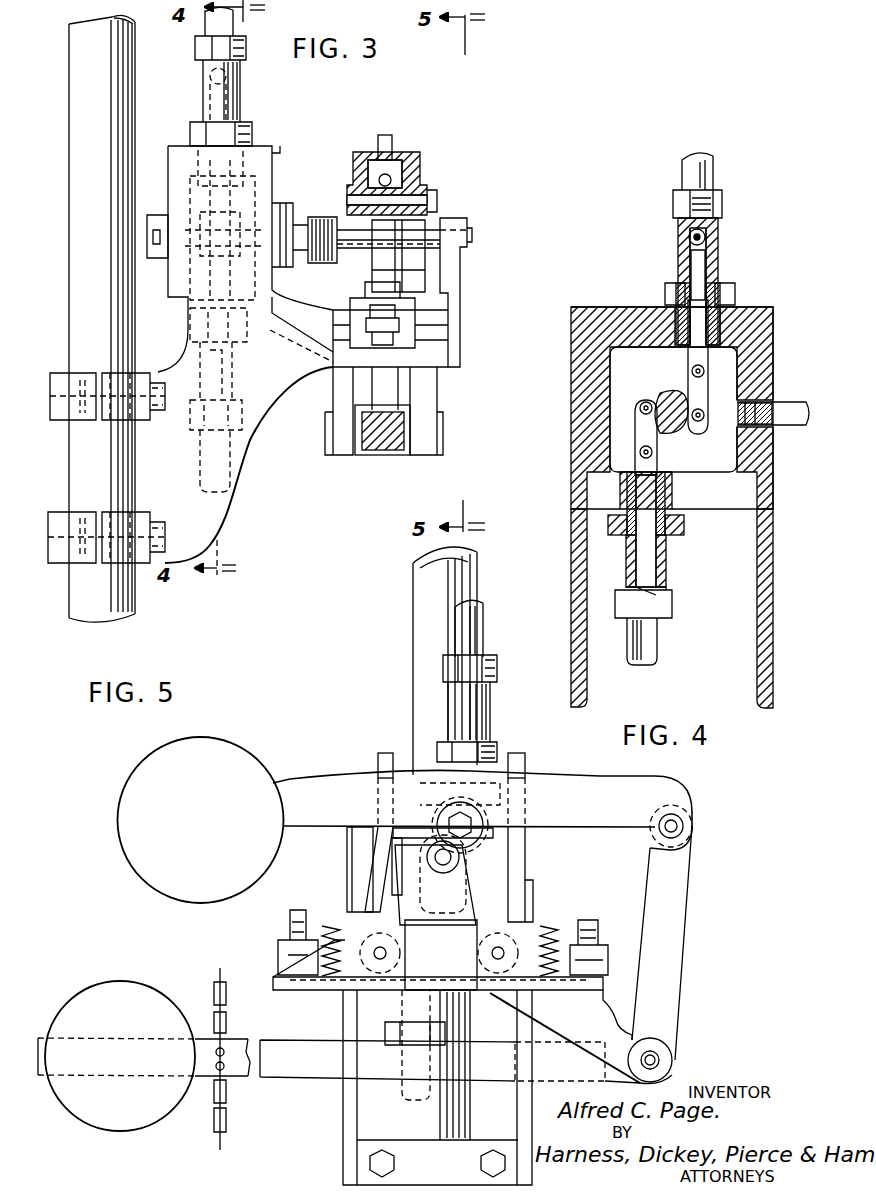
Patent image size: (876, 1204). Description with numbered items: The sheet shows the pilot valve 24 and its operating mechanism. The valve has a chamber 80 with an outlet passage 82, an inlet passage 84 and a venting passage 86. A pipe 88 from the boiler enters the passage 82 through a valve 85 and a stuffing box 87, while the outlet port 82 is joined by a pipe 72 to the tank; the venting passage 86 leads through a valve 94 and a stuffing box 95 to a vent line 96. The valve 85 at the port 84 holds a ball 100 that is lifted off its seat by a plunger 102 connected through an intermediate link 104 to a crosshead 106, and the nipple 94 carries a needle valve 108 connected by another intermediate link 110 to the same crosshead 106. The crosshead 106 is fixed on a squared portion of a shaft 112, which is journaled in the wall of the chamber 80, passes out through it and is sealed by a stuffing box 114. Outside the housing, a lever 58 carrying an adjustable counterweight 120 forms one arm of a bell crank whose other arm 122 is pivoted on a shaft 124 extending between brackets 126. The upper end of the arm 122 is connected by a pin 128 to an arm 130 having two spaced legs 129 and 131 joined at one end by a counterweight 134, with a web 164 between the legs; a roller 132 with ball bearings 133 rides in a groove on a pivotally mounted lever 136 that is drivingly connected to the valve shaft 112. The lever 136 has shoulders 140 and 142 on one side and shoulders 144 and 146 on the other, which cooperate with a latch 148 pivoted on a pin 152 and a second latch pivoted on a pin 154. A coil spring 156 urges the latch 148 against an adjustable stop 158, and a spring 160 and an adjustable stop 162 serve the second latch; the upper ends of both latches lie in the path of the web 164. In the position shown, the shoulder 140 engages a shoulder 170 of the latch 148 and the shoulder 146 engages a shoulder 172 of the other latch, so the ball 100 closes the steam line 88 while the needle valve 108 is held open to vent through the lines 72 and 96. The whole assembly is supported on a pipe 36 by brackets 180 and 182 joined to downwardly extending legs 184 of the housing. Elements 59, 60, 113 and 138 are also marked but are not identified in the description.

In FIG. 3, the pilot valve 24 is at (273, 150).
In FIG. 4, the pilot valve 24 is at (745, 312).
In FIG. 5, the pilot valve 24 is at (622, 790).
In FIG. 3, the pipe 36 is at (116, 113).
In FIG. 5, the pipe 36 is at (414, 580).
In FIG. 5, the lever 58 is at (316, 1078).
In FIG. 5, the chain link 59 is at (214, 1128).
In FIG. 5, the chain 60 is at (226, 982).
In FIG. 4, the pipe 72 is at (790, 428).
In FIG. 3, the chamber 80 is at (274, 178).
In FIG. 4, the chamber 80 is at (762, 360).
In FIG. 4, the outlet passage 82 is at (776, 404).
In FIG. 4, the inlet passage 84 is at (667, 300).
In FIG. 3, the valve 85 is at (228, 108).
In FIG. 4, the valve 85 is at (714, 252).
In FIG. 5, the valve 85 is at (488, 702).
In FIG. 4, the venting passage 86 is at (682, 505).
In FIG. 4, the stuffing box 87 is at (678, 305).
In FIG. 3, the pipe 88 is at (226, 20).
In FIG. 4, the pipe 88 is at (714, 172).
In FIG. 5, the pipe 88 is at (472, 622).
In FIG. 3, the valve 94 is at (243, 350).
In FIG. 4, the valve 94 is at (668, 572).
In FIG. 5, the valve 94 is at (432, 1003).
In FIG. 4, the stuffing box 95 is at (610, 522).
In FIG. 3, the vent line 96 is at (233, 442).
In FIG. 4, the vent line 96 is at (658, 640).
In FIG. 5, the vent line 96 is at (415, 1100).
In FIG. 3, the ball 100 is at (226, 74).
In FIG. 4, the ball 100 is at (705, 235).
In FIG. 4, the plunger 102 is at (704, 280).
In FIG. 3, the intermediate link 104 is at (255, 183).
In FIG. 4, the intermediate link 104 is at (705, 385).
In FIG. 3, the crosshead 106 is at (276, 198).
In FIG. 4, the crosshead 106 is at (682, 432).
In FIG. 4, the needle valve 108 is at (658, 558).
In FIG. 3, the intermediate link 110 is at (205, 268).
In FIG. 4, the intermediate link 110 is at (637, 428).
In FIG. 3, the shaft 112 is at (333, 250).
In FIG. 4, the shaft 112 is at (648, 400).
In FIG. 3, the support bar 113 is at (462, 272).
In FIG. 5, the support bar 113 is at (470, 842).
In FIG. 3, the stuffing box 114 is at (310, 222).
In FIG. 5, the counterweight 120 is at (120, 1056).
In FIG. 3, the bell crank arm 122 is at (437, 371).
In FIG. 5, the bell crank arm 122 is at (677, 1005).
In FIG. 3, the shaft 124 is at (442, 432).
In FIG. 5, the shaft 124 is at (658, 1058).
In FIG. 3, the brackets 126 is at (427, 394).
In FIG. 5, the brackets 126 is at (565, 1036).
In FIG. 5, the pin 128 is at (690, 826).
In FIG. 3, the leg 129 is at (278, 156).
In FIG. 3, the arm 130 is at (358, 155).
In FIG. 5, the arm 130 is at (385, 752).
In FIG. 3, the leg 131 is at (440, 185).
In FIG. 5, the leg 131 is at (629, 798).
In FIG. 3, the roller 132 is at (402, 176).
In FIG. 5, the roller 132 is at (470, 826).
In FIG. 3, the ball bearings 133 is at (408, 194).
In FIG. 5, the counterweight 134 is at (201, 820).
In FIG. 3, the lever 136 is at (402, 246).
In FIG. 5, the lever 136 is at (400, 830).
In FIG. 3, the bearing 138 is at (412, 206).
In FIG. 5, the shoulder 140 is at (460, 862).
In FIG. 5, the shoulder 142 is at (472, 890).
In FIG. 5, the shoulder 144 is at (395, 848).
In FIG. 5, the shoulder 146 is at (400, 862).
In FIG. 3, the latch 148 is at (392, 140).
In FIG. 5, the latch 148 is at (525, 757).
In FIG. 5, the pin 152 is at (470, 992).
In FIG. 5, the pin 154 is at (378, 957).
In FIG. 5, the coil spring 156 is at (596, 930).
In FIG. 5, the adjustable stop 158 is at (548, 950).
In FIG. 5, the spring 160 is at (330, 915).
In FIG. 3, the adjustable stop 162 is at (417, 300).
In FIG. 5, the adjustable stop 162 is at (285, 930).
In FIG. 3, the web 164 is at (398, 156).
In FIG. 5, the web 164 is at (492, 745).
In FIG. 5, the shoulder 170 is at (495, 848).
In FIG. 5, the shoulder 172 is at (372, 962).
In FIG. 3, the bracket 180 is at (116, 422).
In FIG. 3, the bracket 182 is at (120, 565).
In FIG. 3, the legs 184 is at (226, 508).
In FIG. 4, the legs 184 is at (589, 690).